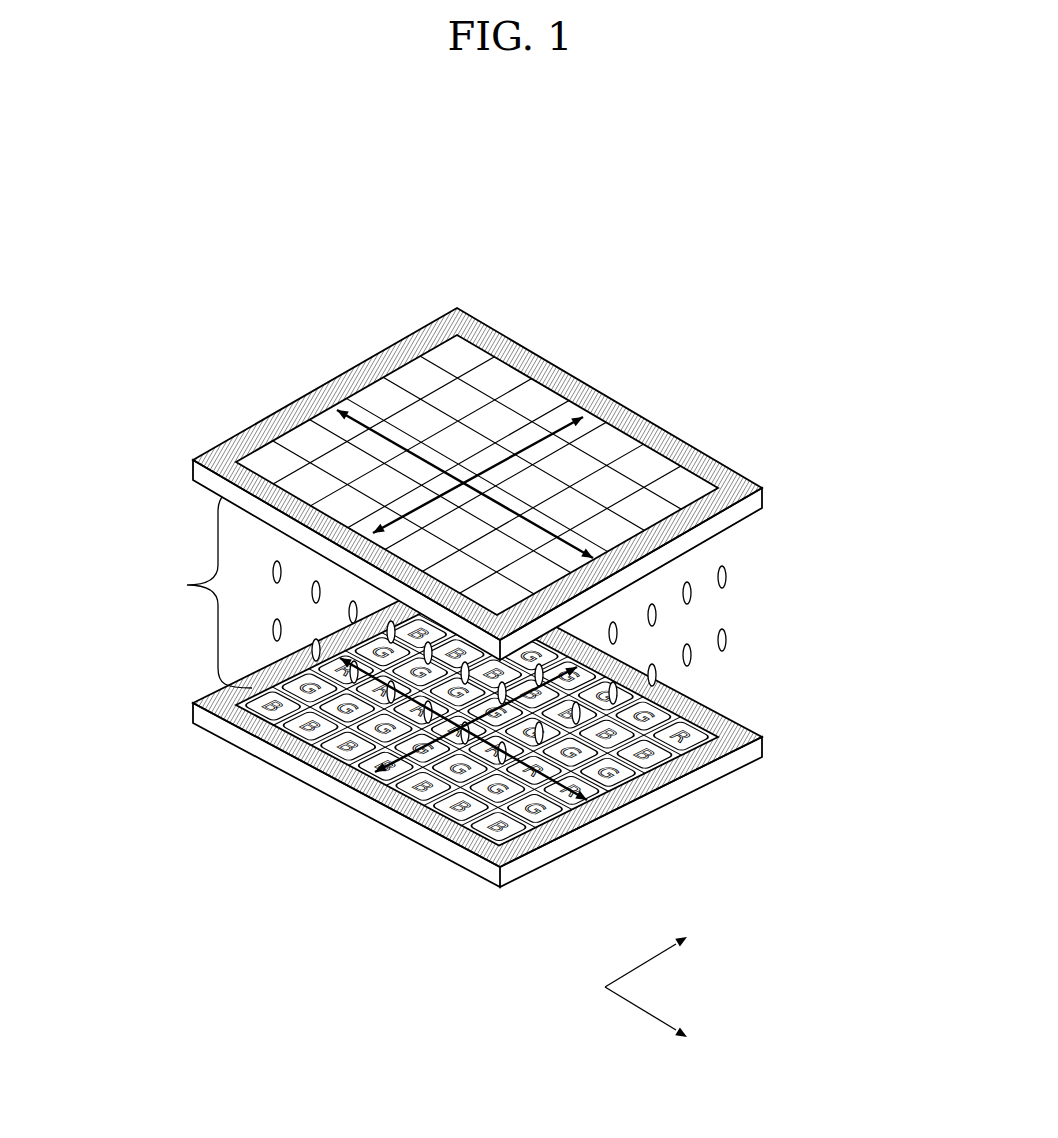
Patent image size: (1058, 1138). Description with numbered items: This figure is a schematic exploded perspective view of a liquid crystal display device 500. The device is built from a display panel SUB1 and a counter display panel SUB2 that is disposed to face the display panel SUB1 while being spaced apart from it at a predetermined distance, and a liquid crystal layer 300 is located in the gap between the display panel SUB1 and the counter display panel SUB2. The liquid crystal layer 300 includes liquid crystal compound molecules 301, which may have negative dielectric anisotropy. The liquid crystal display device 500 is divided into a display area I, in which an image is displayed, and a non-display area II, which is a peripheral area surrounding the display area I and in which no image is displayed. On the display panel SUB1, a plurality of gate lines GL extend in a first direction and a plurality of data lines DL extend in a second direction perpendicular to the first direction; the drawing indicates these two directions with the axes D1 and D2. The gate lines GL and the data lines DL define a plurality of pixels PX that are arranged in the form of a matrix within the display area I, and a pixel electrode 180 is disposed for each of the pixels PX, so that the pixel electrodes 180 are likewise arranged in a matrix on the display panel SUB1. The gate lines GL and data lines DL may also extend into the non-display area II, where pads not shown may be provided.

The liquid crystal display device 500 is at (548, 256).
The display panel SUB1 is at (520, 759).
The counter display panel SUB2 is at (744, 451).
The liquid crystal layer 300 is at (745, 575).
The liquid crystal compound molecules 301 is at (727, 641).
The pixel electrode 180 is at (697, 743).
The pixel PX is at (613, 778).
The gate line GL is at (477, 721).
The data line DL is at (477, 721).
The display area I is at (368, 422).
The non-display area II is at (206, 589).
The first direction D1 is at (661, 1017).
The second direction D2 is at (661, 954).